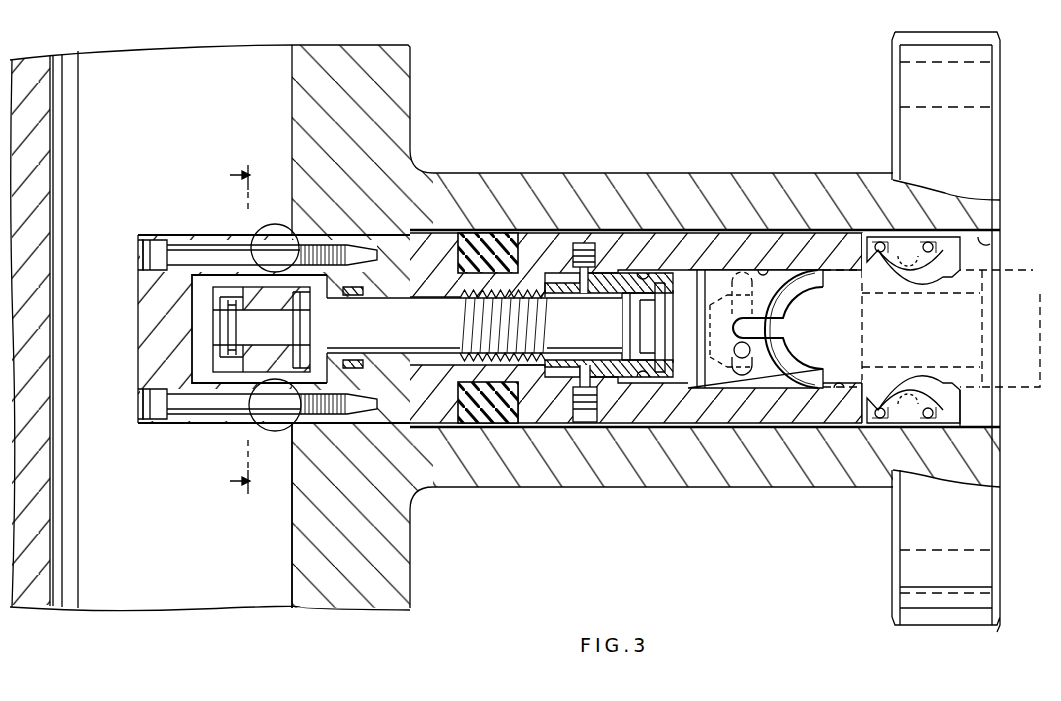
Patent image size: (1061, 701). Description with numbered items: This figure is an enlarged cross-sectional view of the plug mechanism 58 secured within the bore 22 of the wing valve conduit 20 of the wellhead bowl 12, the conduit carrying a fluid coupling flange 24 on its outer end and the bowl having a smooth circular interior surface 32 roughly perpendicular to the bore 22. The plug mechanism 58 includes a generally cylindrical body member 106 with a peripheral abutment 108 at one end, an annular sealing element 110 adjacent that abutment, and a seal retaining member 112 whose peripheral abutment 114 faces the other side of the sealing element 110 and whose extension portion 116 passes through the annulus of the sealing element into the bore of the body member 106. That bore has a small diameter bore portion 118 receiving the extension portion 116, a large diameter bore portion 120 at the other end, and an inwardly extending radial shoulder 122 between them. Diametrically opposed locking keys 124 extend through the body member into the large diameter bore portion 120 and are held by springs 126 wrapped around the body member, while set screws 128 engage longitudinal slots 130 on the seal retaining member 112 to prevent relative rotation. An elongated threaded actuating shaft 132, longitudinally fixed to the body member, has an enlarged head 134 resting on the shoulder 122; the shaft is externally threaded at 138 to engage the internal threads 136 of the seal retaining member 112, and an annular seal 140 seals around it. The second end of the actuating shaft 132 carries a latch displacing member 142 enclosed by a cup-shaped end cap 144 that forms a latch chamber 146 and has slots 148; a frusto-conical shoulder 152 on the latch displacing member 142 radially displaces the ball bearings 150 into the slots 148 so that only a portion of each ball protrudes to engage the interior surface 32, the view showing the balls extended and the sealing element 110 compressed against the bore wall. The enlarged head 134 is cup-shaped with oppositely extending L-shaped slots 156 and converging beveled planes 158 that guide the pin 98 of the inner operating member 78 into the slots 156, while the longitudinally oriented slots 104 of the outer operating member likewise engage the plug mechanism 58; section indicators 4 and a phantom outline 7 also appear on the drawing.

The wellhead bowl 12 is at (410, 73).
The wing valve conduit 20 is at (698, 195).
The bore 22 is at (990, 242).
The fluid coupling flange 24 is at (935, 617).
The interior surface 32 is at (292, 515).
The plug mechanism 58 is at (766, 440).
The inner operating member 78 is at (855, 270).
The pin 98 is at (750, 335).
The longitudinally oriented slots 104 is at (982, 384).
The body member 106 is at (707, 418).
The peripheral abutment 108 is at (508, 422).
The annular sealing element 110 is at (488, 423).
The seal retaining member 112 is at (427, 240).
The peripheral abutment 114 is at (477, 238).
The extension portion 116 is at (548, 280).
The small diameter bore portion 118 is at (650, 263).
The large diameter bore portion 120 is at (843, 383).
The radial shoulder 122 is at (673, 378).
The locking keys 124 is at (907, 267).
The springs 126 is at (928, 417).
The set screws 128 is at (588, 243).
The longitudinal slots 130 is at (557, 383).
The threaded actuating shaft 132 is at (420, 340).
The enlarged head 134 is at (763, 277).
The internal threads 136 is at (500, 233).
The external threads 138 is at (467, 423).
The annular seal 140 is at (363, 336).
The latch displacing member 142 is at (247, 380).
The end cap 144 is at (147, 320).
The latch chamber 146 is at (200, 357).
The slots 148 is at (270, 427).
The ball bearings 150 is at (273, 228).
The frusto-conical shoulder 152 is at (247, 277).
The L-shaped slots 156 is at (786, 345).
The beveled planes 158 is at (800, 298).
The section outline 7 is at (1034, 337).
The section line 4 is at (226, 329).